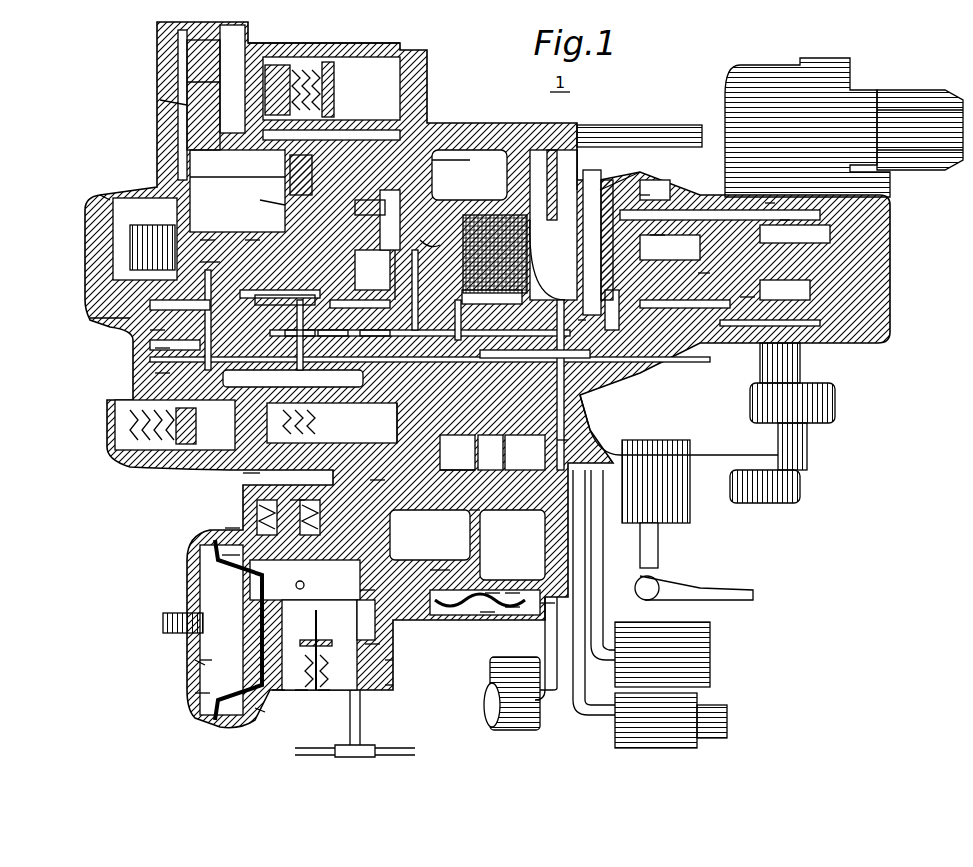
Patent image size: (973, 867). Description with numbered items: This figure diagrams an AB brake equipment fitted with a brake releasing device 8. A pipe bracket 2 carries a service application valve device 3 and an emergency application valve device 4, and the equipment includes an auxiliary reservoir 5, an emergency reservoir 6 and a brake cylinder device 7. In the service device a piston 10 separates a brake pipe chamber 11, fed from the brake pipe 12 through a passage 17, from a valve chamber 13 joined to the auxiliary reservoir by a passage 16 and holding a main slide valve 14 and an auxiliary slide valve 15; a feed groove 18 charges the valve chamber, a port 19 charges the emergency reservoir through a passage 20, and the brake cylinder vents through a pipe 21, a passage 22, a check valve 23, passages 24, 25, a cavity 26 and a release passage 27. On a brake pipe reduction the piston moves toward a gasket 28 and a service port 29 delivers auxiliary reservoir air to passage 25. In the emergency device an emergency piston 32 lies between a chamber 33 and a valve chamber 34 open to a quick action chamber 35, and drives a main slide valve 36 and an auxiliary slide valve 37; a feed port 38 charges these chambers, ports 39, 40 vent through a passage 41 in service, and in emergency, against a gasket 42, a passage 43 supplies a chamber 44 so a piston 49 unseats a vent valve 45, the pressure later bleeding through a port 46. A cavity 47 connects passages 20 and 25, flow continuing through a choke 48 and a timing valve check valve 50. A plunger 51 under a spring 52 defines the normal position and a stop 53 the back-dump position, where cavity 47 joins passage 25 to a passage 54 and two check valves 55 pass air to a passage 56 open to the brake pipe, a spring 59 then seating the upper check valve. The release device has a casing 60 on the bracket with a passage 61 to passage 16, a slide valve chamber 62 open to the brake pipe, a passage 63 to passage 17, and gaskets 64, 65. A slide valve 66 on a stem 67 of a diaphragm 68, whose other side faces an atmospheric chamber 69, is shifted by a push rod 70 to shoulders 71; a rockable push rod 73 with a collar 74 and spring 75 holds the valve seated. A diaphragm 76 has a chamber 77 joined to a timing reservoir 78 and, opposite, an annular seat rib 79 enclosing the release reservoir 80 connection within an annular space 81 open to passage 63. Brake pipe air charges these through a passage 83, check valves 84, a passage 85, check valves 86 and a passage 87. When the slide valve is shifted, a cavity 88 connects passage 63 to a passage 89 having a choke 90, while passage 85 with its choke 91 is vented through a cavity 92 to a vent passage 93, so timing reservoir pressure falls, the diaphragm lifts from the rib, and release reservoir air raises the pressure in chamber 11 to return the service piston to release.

The pipe bracket 2 is at (505, 124).
The service application valve device 3 is at (640, 126).
The emergency application valve device 4 is at (358, 52).
The auxiliary reservoir 5 is at (523, 728).
The emergency reservoir 6 is at (703, 652).
The brake cylinder device 7 is at (717, 720).
The brake releasing device 8 is at (213, 538).
The piston 10 is at (642, 194).
The brake pipe chamber 11 is at (592, 190).
The brake pipe 12 is at (383, 757).
The valve chamber 13 is at (785, 220).
The main slide valve 14 is at (770, 203).
The auxiliary slide valve 15 is at (657, 236).
The passage 16 is at (597, 400).
The passage 17 is at (463, 301).
The feed groove 18 is at (615, 185).
The port 19 is at (617, 271).
The passage 20 is at (582, 320).
The pipe 21 is at (592, 697).
The passage 22 is at (345, 402).
The check valve 23 is at (273, 395).
The passage 24 is at (395, 414).
The passage 25 is at (667, 382).
The cavity 26 is at (747, 297).
The release passage 27 is at (768, 360).
The gasket 28 is at (540, 272).
The service port 29 is at (703, 273).
The emergency piston 32 is at (370, 213).
The chamber 33 is at (430, 246).
The valve chamber 34 is at (270, 200).
The quick action chamber 35 is at (462, 158).
The main slide valve 36 is at (248, 240).
The auxiliary slide valve 37 is at (203, 240).
The feed port 38 is at (420, 180).
The port 39 is at (205, 260).
The port 40 is at (158, 330).
The passage 41 is at (162, 348).
The gasket 42 is at (395, 287).
The passage 43 is at (92, 318).
The chamber 44 is at (190, 62).
The brake pipe vent valve 45 is at (270, 62).
The port 46 is at (165, 106).
The cavity 47 is at (290, 296).
The choke 48 is at (247, 474).
The piston 49 is at (176, 82).
The timing valve check valve 50 is at (163, 373).
The plunger 51 is at (130, 200).
The spring 52 is at (108, 194).
The stop 53 is at (375, 323).
The passage 54 is at (333, 323).
The check valves 55 is at (265, 195).
The passage 56 is at (365, 135).
The spring 59 is at (296, 166).
The casing 60 is at (377, 481).
The passage 61 is at (570, 448).
The slide valve chamber 62 is at (372, 644).
The passage 63 is at (367, 620).
The gasket 64 is at (547, 448).
The gasket 65 is at (457, 476).
The slide valve 66 is at (393, 660).
The stem 67 is at (278, 690).
The flexible diaphragm 68 is at (200, 693).
The chamber 69 is at (198, 661).
The push rod 70 is at (183, 614).
The shoulders 71 is at (258, 709).
The rockable push rod 73 is at (300, 690).
The collar 74 is at (310, 648).
The spring 75 is at (322, 690).
The flexible diaphragm 76 is at (512, 608).
The chamber 77 is at (488, 613).
The timing reservoir 78 is at (547, 604).
The annular seat rib 79 is at (490, 590).
The release reservoir 80 is at (512, 544).
The annular space 81 is at (507, 592).
The passage 83 is at (230, 555).
The check valves 84 is at (230, 528).
The passage 85 is at (440, 570).
The check valves 86 is at (298, 498).
The passage 87 is at (430, 534).
The cavity 88 is at (393, 685).
The passage 89 is at (472, 533).
The choke 90 is at (365, 590).
The choke 91 is at (305, 580).
The cavity 92 is at (202, 662).
The atmospheric vent passage 93 is at (304, 585).